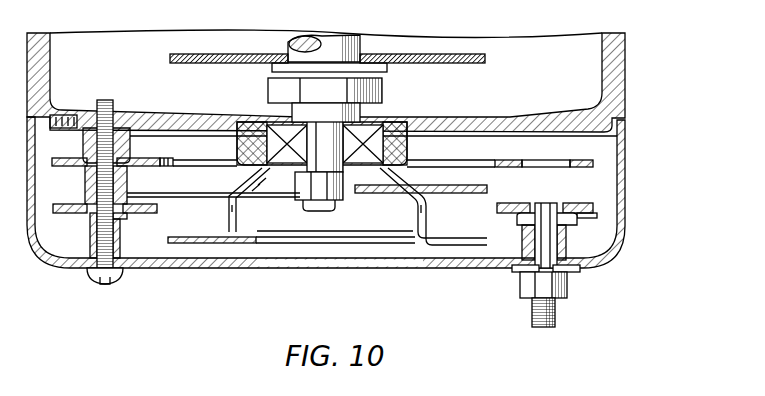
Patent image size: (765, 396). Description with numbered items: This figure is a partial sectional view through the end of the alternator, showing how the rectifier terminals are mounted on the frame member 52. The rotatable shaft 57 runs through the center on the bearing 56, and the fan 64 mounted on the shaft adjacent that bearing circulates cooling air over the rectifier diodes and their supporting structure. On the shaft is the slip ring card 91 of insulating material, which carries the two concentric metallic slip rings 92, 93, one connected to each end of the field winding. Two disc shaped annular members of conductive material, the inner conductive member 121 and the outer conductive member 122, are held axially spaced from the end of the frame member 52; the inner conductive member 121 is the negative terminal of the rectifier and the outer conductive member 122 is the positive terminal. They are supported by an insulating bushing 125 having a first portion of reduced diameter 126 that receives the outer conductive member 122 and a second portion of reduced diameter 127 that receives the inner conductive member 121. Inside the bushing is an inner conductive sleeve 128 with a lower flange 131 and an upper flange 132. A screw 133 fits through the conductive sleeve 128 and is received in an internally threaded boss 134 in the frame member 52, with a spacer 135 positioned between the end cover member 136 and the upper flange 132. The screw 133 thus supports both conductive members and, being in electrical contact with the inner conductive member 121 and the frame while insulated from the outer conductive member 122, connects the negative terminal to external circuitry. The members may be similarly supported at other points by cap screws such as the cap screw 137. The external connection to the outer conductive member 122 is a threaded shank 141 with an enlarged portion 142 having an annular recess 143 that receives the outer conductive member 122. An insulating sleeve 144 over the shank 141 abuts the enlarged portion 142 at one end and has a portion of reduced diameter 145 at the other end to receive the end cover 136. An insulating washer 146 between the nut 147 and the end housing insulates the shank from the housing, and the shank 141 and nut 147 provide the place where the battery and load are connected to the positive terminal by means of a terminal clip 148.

The frame member 52 is at (618, 97).
The bearing 56 is at (365, 135).
The rotatable shaft 57 is at (318, 147).
The fan 64 is at (435, 238).
The slip ring card 91 is at (316, 60).
The slip ring 92 is at (180, 63).
The slip ring 93 is at (233, 63).
The inner conductive member 121 is at (602, 148).
The outer conductive member 122 is at (576, 218).
The insulating bushing 125 is at (128, 185).
The first portion of reduced diameter 126 is at (88, 208).
The second portion of reduced diameter 127 is at (129, 165).
The inner conductive sleeve 128 is at (86, 182).
The lower flange 131 is at (87, 160).
The upper flange 132 is at (128, 218).
The screw 133 is at (120, 228).
The internally threaded boss 134 is at (124, 140).
The spacer 135 is at (123, 243).
The end cover member 136 is at (75, 268).
The cap screw 137 is at (224, 262).
The threaded shank 141 is at (563, 246).
The enlarged portion 142 is at (516, 203).
The annular recess 143 is at (568, 203).
The insulating sleeve 144 is at (523, 222).
The portion of reduced diameter 145 is at (520, 272).
The insulating washer 146 is at (576, 270).
The nut 147 is at (522, 290).
The terminal clip 148 is at (568, 290).